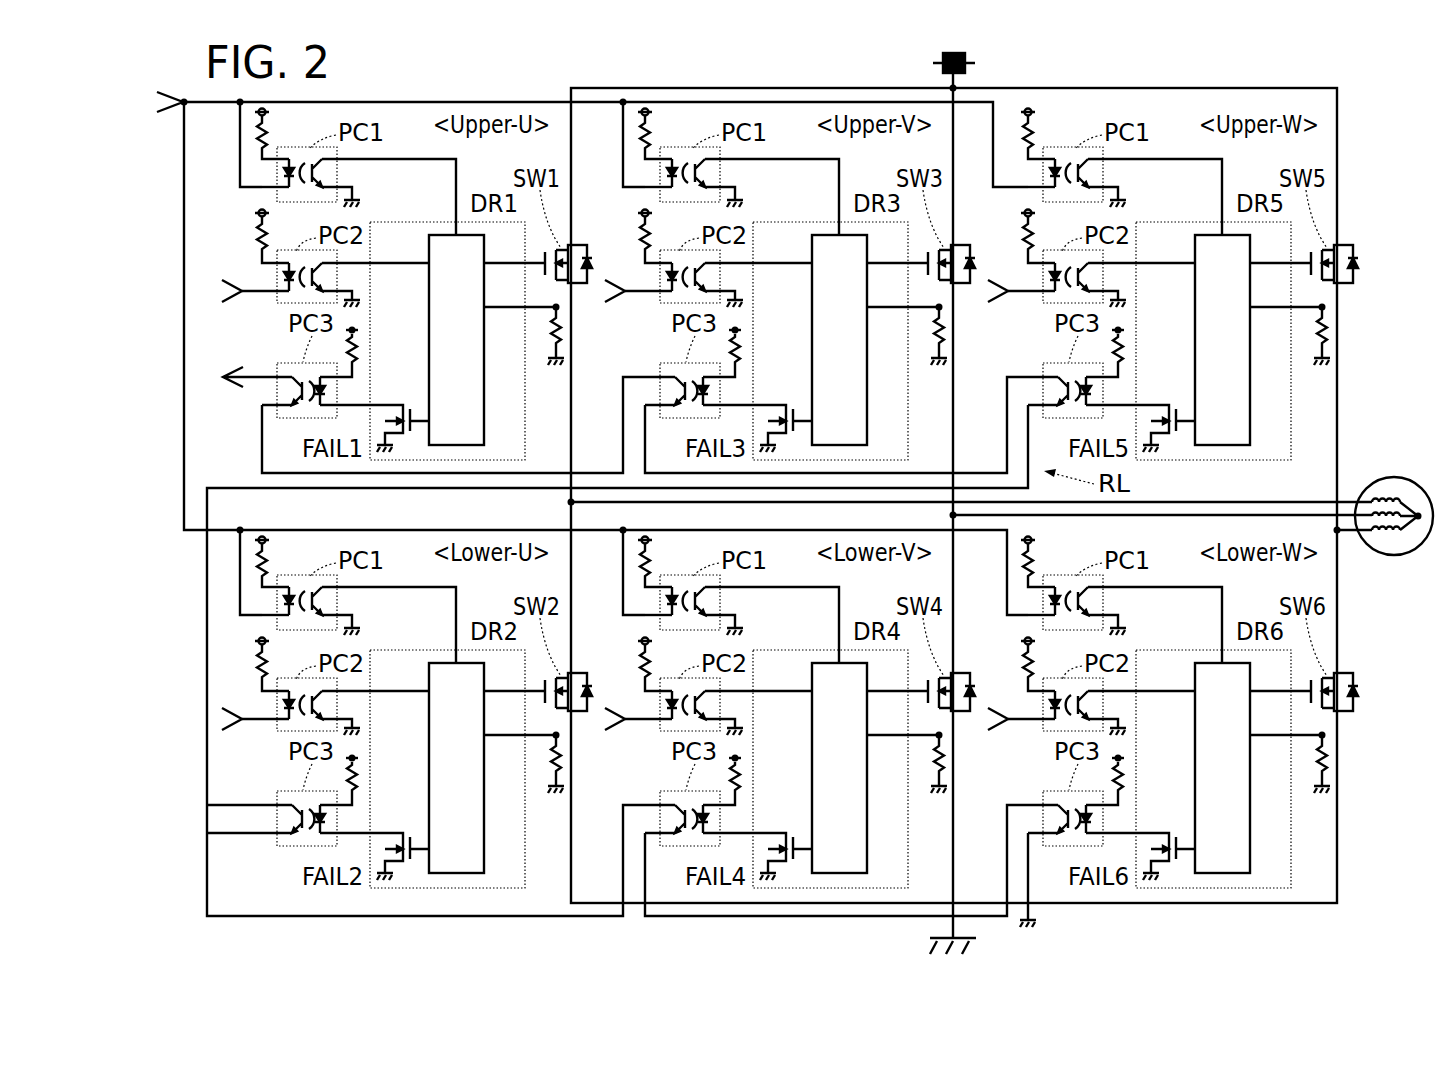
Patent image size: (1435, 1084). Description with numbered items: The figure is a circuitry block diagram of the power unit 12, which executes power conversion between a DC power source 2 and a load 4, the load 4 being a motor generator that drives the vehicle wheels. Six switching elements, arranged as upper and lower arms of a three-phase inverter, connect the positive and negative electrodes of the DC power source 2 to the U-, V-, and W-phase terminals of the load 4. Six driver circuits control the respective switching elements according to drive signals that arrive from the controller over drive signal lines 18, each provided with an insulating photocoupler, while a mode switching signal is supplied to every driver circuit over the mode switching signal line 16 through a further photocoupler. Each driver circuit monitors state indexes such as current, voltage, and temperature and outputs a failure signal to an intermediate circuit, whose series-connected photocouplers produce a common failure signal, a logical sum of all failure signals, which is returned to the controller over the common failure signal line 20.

The DC power source 2 is at (968, 59).
The load 4 is at (1392, 477).
The power unit 12 is at (1372, 92).
The mode switching signal line 16 is at (172, 112).
The drive signal lines 18 is at (608, 490).
The common failure signal line 20 is at (260, 386).